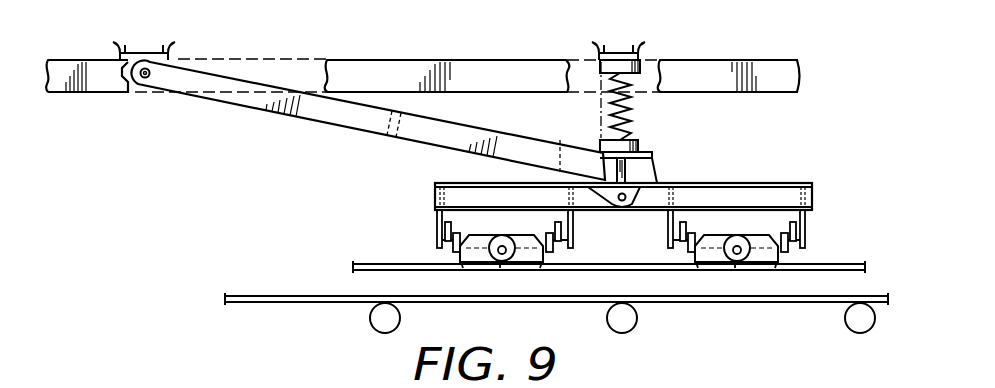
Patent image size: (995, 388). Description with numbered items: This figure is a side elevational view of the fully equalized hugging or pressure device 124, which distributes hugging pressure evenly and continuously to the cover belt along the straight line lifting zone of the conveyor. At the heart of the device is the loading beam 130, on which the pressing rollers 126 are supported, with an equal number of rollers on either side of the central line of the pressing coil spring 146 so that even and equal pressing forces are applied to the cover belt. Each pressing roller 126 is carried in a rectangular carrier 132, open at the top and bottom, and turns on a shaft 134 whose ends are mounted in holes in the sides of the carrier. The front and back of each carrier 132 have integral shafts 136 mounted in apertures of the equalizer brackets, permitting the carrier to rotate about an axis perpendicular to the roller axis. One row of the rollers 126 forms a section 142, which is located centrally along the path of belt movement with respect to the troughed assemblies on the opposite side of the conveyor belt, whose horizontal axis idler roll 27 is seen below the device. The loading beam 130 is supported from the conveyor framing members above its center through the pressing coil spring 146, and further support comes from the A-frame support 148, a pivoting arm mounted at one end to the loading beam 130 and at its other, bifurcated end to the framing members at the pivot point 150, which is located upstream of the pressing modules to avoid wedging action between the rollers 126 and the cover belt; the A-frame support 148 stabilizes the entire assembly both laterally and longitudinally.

The idler roll 27 is at (634, 325).
The fully equalized hugging or pressure device 124 is at (318, 153).
The pressing roller 126 is at (736, 262).
The loading beam 130 is at (655, 181).
The rectangular carrier 132 is at (757, 237).
The shaft 134 is at (498, 262).
The shaft 136 is at (541, 256).
The section 142 is at (720, 177).
The pressing coil spring 146 is at (634, 129).
The A-frame support 148 is at (434, 133).
The pivot point 150 is at (144, 79).